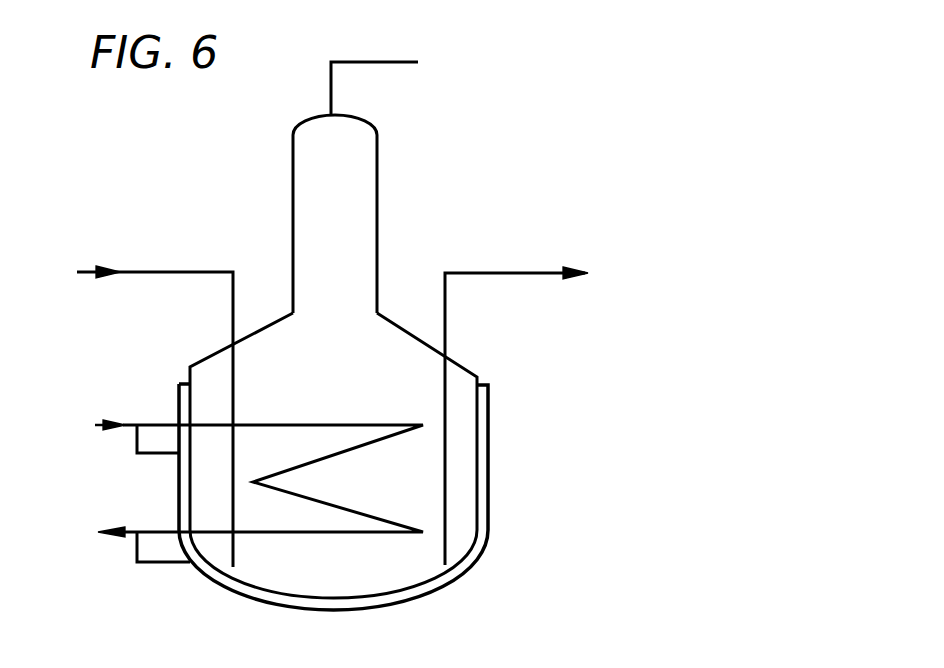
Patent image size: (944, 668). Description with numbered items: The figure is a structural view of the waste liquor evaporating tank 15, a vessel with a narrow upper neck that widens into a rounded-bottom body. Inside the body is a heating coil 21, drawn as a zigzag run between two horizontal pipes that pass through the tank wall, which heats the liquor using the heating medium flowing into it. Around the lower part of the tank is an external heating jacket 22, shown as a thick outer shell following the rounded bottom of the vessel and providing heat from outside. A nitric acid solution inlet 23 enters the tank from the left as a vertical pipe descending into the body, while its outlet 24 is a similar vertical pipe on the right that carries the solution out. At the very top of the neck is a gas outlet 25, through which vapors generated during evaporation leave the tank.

The waste liquor evaporating tank 15 is at (377, 173).
The heating coil 21 is at (387, 533).
The external heating jacket 22 is at (488, 421).
The nitric acid solution inlet 23 is at (138, 414).
The outlet 24 is at (533, 414).
The gas outlet 25 is at (393, 83).